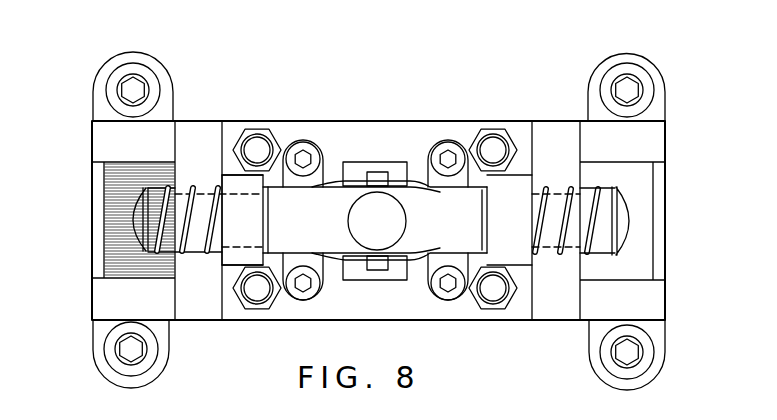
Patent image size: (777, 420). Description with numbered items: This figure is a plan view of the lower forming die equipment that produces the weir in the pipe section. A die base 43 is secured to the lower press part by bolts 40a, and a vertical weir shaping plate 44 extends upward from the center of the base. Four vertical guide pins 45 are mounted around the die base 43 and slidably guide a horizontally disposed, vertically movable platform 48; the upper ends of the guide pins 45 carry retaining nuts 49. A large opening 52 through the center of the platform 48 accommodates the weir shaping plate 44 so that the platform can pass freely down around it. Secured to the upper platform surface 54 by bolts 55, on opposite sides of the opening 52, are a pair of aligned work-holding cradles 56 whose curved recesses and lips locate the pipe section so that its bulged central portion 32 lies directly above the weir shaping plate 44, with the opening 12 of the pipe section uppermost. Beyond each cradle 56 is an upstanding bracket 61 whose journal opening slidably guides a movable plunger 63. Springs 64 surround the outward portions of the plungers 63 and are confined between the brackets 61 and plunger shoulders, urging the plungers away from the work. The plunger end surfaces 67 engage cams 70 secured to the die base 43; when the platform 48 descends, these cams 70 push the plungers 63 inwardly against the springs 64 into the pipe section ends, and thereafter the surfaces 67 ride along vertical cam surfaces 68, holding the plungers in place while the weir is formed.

The opening 12 is at (377, 221).
The bulged central portion 32 is at (412, 183).
The bolts 40a is at (123, 70).
The die base 43 is at (558, 312).
The weir shaping plate 44 is at (393, 163).
The guide pins 45 is at (497, 297).
The platform 48 is at (222, 137).
The retaining nuts 49 is at (260, 128).
The opening 52 is at (372, 165).
The upper platform surface 54 is at (437, 128).
The bolts 55 is at (457, 292).
The work-holding cradles 56 is at (287, 262).
The bracket 61 is at (232, 263).
The plunger 63 is at (557, 197).
The springs 64 is at (545, 188).
The plunger end surfaces 67 is at (130, 222).
The vertical cam surfaces 68 is at (178, 268).
The cams 70 is at (115, 167).